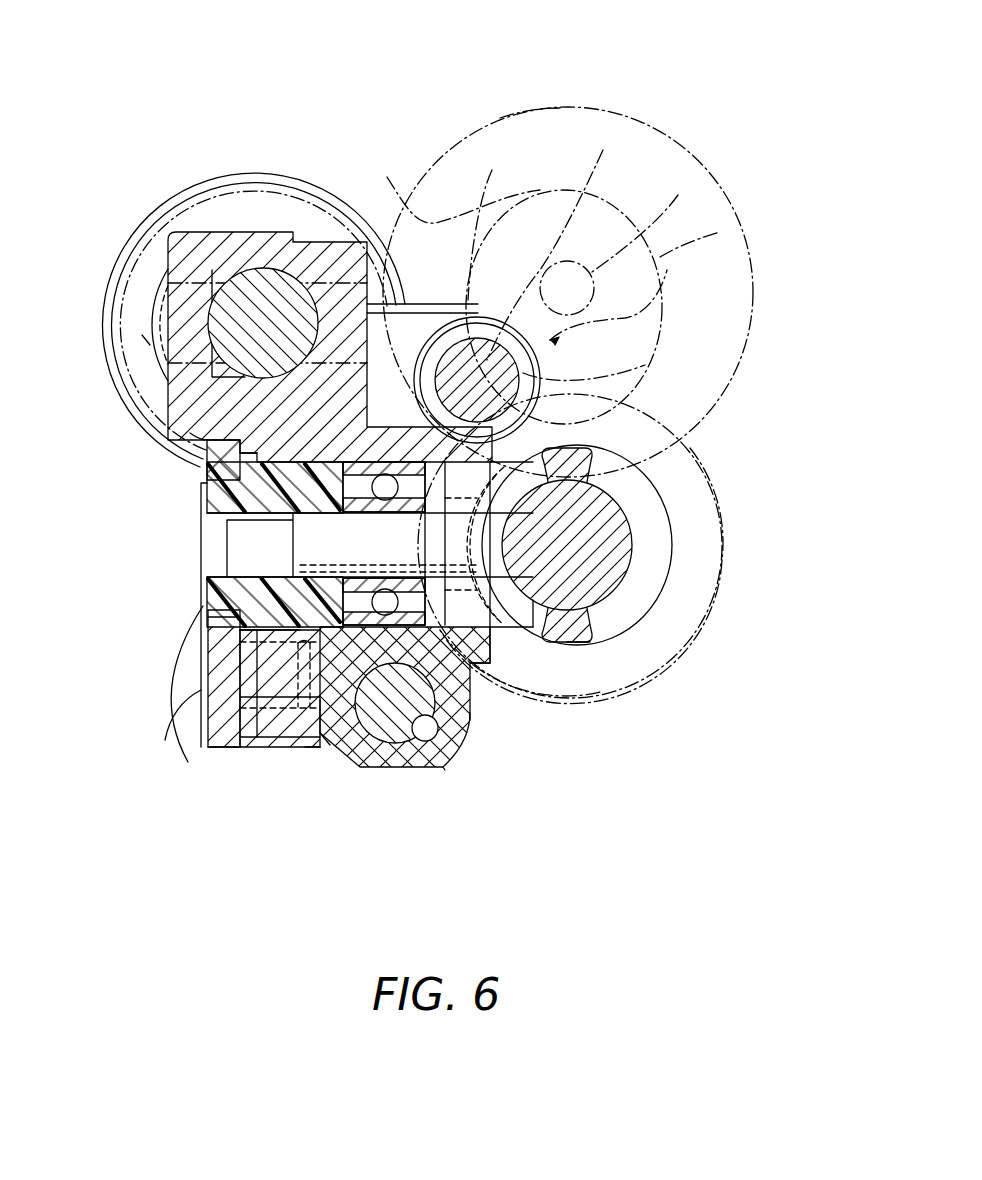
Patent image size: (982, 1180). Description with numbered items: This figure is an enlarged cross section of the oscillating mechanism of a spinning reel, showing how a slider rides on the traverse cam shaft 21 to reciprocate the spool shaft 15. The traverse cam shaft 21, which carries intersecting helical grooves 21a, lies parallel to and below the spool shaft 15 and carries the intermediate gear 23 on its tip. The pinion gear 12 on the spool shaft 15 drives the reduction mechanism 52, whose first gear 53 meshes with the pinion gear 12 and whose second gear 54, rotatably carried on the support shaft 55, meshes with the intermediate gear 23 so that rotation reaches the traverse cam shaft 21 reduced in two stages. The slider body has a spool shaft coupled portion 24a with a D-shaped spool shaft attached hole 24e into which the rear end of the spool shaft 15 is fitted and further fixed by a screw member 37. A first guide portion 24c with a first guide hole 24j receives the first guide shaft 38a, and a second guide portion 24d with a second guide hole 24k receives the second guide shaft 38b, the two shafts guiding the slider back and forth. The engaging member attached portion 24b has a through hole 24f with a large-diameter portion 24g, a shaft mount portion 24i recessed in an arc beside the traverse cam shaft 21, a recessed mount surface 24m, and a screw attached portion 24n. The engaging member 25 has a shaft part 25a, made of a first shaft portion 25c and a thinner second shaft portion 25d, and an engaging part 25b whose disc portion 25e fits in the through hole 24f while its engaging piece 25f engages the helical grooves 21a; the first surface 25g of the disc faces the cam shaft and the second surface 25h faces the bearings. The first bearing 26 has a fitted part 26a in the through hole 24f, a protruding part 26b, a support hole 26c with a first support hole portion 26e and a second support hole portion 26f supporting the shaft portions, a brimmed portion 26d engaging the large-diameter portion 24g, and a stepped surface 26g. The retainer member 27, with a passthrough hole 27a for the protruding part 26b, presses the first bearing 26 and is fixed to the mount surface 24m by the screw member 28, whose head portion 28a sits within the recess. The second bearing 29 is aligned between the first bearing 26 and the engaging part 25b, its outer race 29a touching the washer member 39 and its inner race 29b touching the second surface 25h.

The pinion gear 12 is at (238, 180).
The spool shaft 15 is at (262, 295).
The traverse cam shaft 21 is at (640, 440).
The helical grooves 21a is at (630, 545).
The intermediate gear 23 is at (703, 660).
The spool shaft coupled portion 24a is at (368, 205).
The engaging member attached portion 24b is at (488, 365).
The first guide portion 24c is at (603, 252).
The second guide portion 24d is at (480, 772).
The spool shaft attached hole 24e is at (195, 275).
The through hole 24f is at (225, 466).
The large-diameter portion 24g is at (190, 435).
The shaft mount portion 24i is at (600, 692).
The first guide hole 24j is at (601, 364).
The second guide hole 24k is at (445, 775).
The mount surface 24m is at (235, 628).
The screw attached portion 24n is at (340, 760).
The engaging member 25 is at (632, 548).
The shaft part 25a is at (293, 700).
The engaging part 25b is at (535, 470).
The first shaft portion 25c is at (142, 335).
The second shaft portion 25d is at (253, 548).
The disc portion 25e is at (425, 712).
The engaging piece 25f is at (590, 648).
The first surface 25g is at (530, 630).
The second surface 25h is at (458, 698).
The first bearing 26 is at (305, 747).
The fitted part 26a is at (168, 300).
The protruding part 26b is at (207, 448).
The support hole 26c is at (268, 705).
The brimmed portion 26d is at (215, 617).
The first support hole portion 26e is at (250, 500).
The second support hole portion 26f is at (198, 535).
The stepped surface 26g is at (245, 630).
The retainer member 27 is at (215, 755).
The passthrough hole 27a is at (213, 590).
The screw member 28 is at (156, 709).
The head portion 28a is at (190, 720).
The second bearing 29 is at (387, 712).
The outer race 29a is at (428, 740).
The inner race 29b is at (365, 505).
The screw member 37 is at (470, 235).
The first guide shaft 38a is at (603, 234).
The second guide shaft 38b is at (465, 765).
The washer member 39 is at (342, 712).
The reduction mechanism 52 is at (708, 160).
The first gear 53 is at (508, 112).
The second gear 54 is at (727, 215).
The support shaft 55 is at (678, 195).